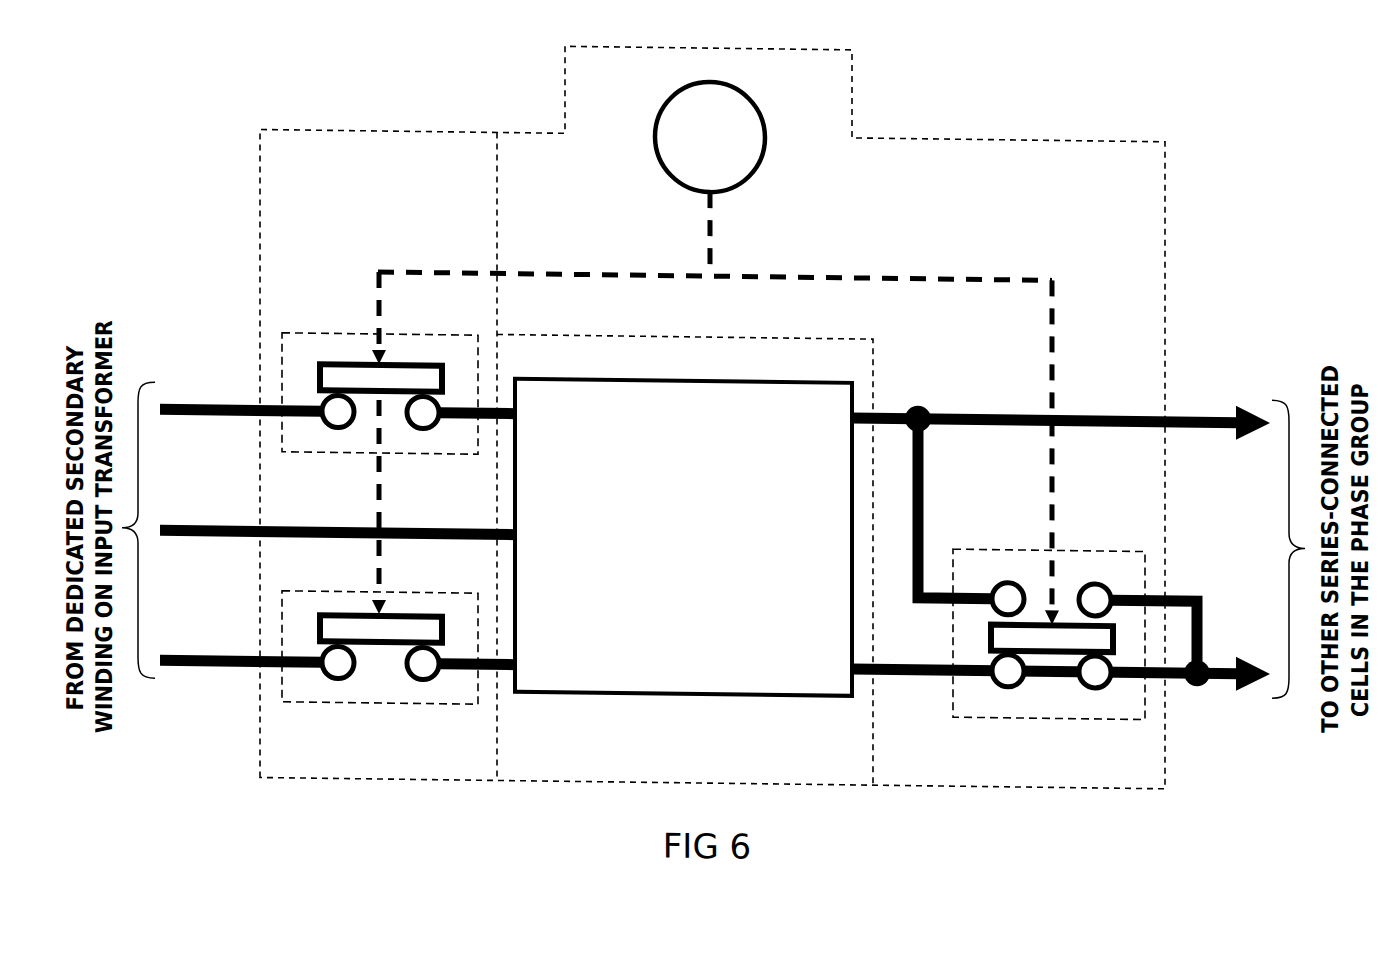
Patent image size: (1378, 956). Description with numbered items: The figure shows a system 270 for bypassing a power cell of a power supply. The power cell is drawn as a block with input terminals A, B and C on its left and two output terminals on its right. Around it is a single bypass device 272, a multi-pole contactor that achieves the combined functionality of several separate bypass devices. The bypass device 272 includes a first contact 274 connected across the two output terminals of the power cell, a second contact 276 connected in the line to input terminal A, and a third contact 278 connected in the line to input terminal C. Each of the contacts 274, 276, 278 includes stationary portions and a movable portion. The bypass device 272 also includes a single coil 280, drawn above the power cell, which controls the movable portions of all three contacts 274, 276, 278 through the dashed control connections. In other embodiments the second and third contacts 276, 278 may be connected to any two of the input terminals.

The system 270 is at (1221, 106).
The bypass device 272 is at (1165, 231).
The first contact 274 is at (1086, 714).
The second contact 276 is at (432, 334).
The third contact 278 is at (333, 707).
The coil 280 is at (758, 163).